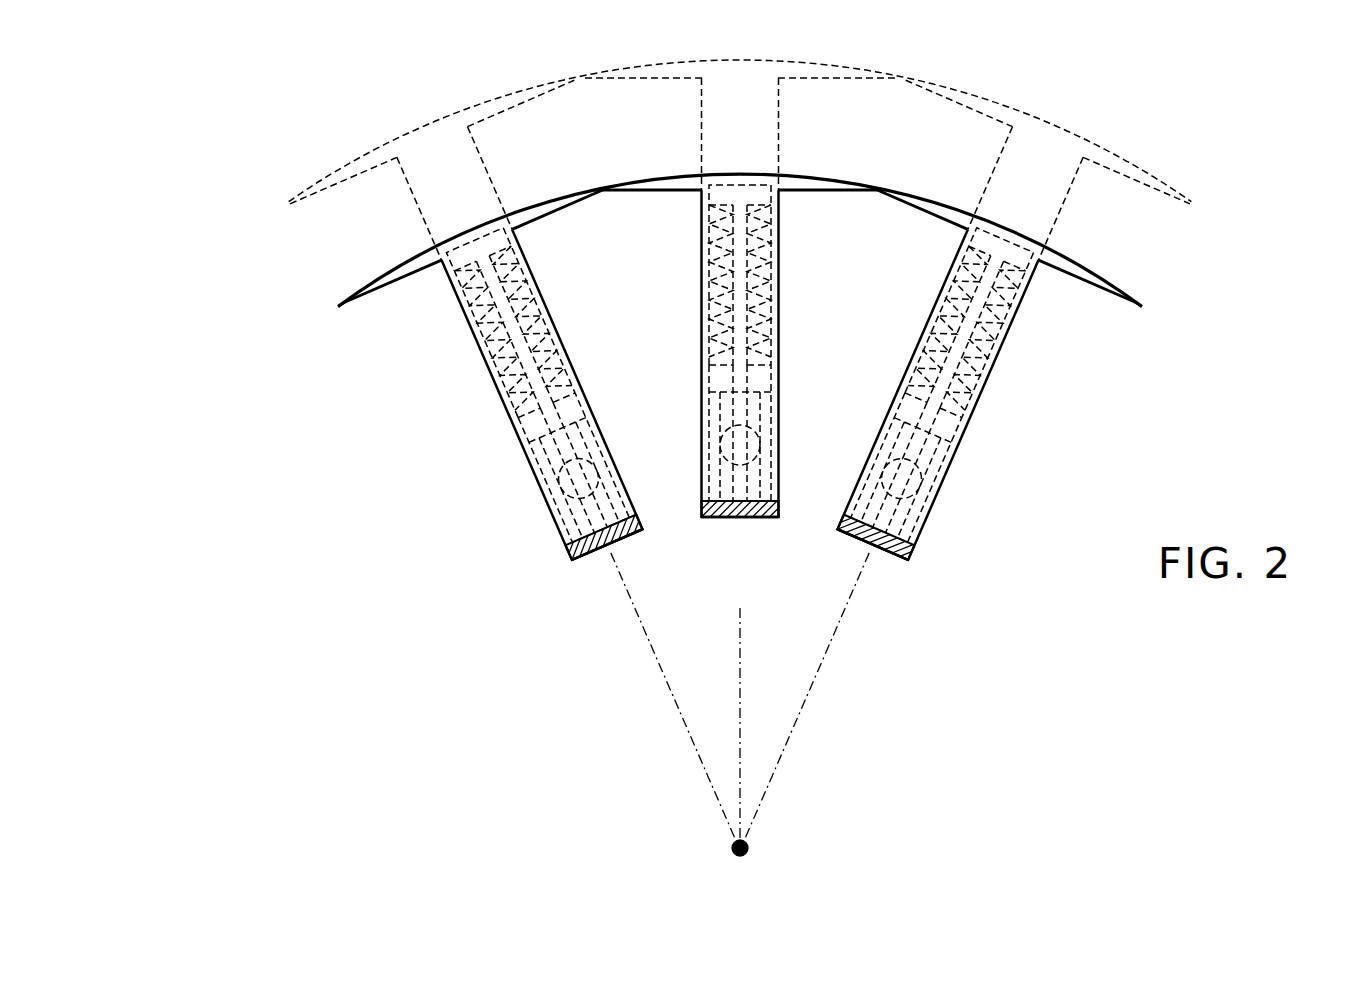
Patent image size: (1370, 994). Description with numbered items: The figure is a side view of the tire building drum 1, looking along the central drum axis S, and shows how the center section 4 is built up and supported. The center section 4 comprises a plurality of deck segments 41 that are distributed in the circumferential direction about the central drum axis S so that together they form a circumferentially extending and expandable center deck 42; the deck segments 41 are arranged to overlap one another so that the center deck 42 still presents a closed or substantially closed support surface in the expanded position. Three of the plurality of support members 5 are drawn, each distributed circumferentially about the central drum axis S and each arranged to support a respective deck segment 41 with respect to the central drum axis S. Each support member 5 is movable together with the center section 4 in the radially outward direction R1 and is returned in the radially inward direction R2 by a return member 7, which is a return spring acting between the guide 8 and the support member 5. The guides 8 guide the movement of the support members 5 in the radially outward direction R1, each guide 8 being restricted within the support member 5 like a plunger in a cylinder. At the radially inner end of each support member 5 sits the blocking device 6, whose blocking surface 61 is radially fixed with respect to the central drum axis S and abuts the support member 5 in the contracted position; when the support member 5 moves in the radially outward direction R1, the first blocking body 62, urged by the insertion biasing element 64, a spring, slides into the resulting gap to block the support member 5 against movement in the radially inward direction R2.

The tire building drum 1 is at (282, 123).
The center section 4 is at (1196, 246).
The deck segment 41 is at (655, 192).
The center deck 42 is at (548, 204).
The support member 5 is at (520, 422).
The blocking device 6 is at (530, 460).
The blocking surface 61 is at (848, 532).
The first blocking body 62 is at (570, 520).
The insertion biasing element 64 is at (567, 478).
The return member 7 is at (480, 316).
The guide 8 is at (490, 245).
The central drum axis S is at (740, 867).
The radially outward direction R1 is at (412, 437).
The radially inward direction R2 is at (350, 400).